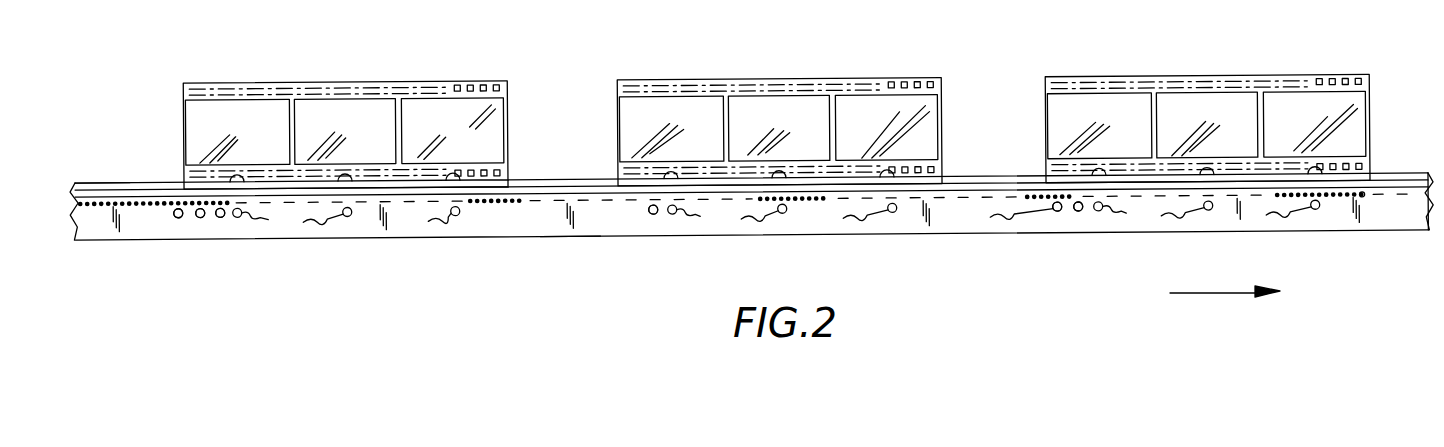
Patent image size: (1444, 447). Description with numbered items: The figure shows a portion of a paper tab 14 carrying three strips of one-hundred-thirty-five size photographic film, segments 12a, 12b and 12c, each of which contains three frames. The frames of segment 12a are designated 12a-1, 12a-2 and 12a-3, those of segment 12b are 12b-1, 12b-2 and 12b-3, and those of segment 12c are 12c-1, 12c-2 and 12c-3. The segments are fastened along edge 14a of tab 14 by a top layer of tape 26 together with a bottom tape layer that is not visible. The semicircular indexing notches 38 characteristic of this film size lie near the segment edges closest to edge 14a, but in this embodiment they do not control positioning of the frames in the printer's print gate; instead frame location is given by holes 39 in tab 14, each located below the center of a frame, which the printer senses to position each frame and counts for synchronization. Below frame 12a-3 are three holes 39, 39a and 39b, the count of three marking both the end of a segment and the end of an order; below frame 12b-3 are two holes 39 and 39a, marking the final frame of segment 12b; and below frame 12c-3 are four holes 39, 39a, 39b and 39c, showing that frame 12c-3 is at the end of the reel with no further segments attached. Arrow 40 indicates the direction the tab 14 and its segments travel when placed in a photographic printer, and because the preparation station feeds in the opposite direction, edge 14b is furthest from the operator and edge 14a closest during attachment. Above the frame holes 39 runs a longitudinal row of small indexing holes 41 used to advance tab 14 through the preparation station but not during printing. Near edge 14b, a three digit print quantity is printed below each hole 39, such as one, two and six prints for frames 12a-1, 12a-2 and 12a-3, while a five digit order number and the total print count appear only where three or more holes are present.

The film segment 12a is at (1207, 105).
The film segment 12b is at (779, 112).
The film segment 12c is at (345, 111).
The frame 12a-1 is at (1342, 128).
The frame 12a-2 is at (1237, 128).
The frame 12a-3 is at (1128, 128).
The frame 12b-1 is at (914, 128).
The frame 12b-2 is at (809, 128).
The frame 12b-3 is at (700, 128).
The frame 12c-1 is at (480, 128).
The frame 12c-2 is at (375, 128).
The frame 12c-3 is at (266, 128).
The paper tab 14 is at (617, 219).
The edge of tab 14a is at (1395, 183).
The edge of tab 14b is at (576, 239).
The top layer of tape 26 is at (100, 182).
The indexing notches 38 is at (348, 183).
The frame indicating hole 39 is at (747, 218).
The additional hole 39a is at (203, 219).
The additional hole 39b is at (199, 219).
The additional hole 39c is at (176, 219).
The arrow 40 is at (1213, 296).
The indexing holes 41 is at (1360, 205).